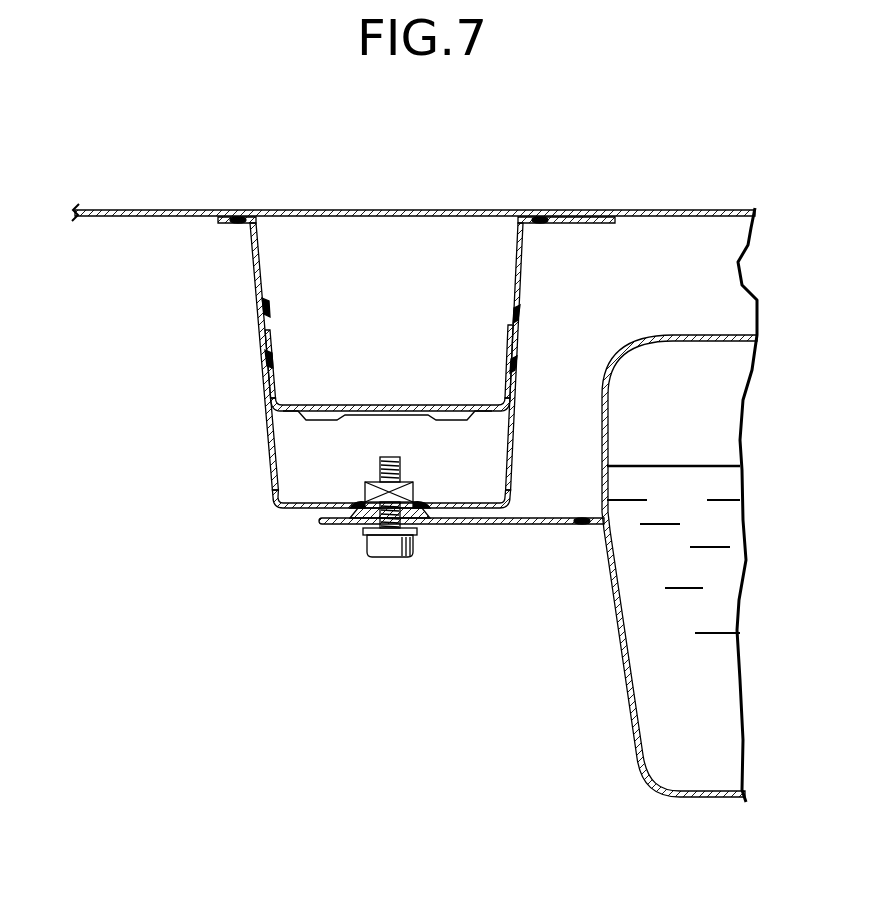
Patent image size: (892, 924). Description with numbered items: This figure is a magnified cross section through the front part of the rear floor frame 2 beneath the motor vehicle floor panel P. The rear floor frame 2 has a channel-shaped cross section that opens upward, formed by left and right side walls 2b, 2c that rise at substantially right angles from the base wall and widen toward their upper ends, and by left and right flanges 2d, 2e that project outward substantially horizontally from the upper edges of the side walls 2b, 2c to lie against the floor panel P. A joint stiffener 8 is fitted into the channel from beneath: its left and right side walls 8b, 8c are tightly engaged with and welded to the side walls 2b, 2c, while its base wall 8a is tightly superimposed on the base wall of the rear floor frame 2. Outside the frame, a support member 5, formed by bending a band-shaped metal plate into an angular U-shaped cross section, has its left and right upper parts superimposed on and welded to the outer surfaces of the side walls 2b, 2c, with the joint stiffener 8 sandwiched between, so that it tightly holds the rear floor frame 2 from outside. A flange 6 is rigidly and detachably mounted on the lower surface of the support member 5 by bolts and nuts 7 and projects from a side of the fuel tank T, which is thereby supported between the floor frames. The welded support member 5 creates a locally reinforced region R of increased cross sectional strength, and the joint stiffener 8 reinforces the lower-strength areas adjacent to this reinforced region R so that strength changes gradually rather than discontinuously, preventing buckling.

The floor panel P is at (651, 213).
The rear floor frame 2 is at (387, 343).
The left side wall 2b is at (265, 288).
The right side wall 2c is at (514, 289).
The left flange 2d is at (225, 224).
The right flange 2e is at (588, 228).
The support member 5 is at (270, 473).
The flange 6 is at (548, 523).
The bolts and nuts 7 is at (393, 550).
The joint stiffener 8 is at (433, 386).
The base wall 8a is at (448, 419).
The left side wall 8b is at (268, 383).
The right side wall 8c is at (520, 343).
The reinforced region R is at (258, 358).
The fuel tank T is at (620, 667).